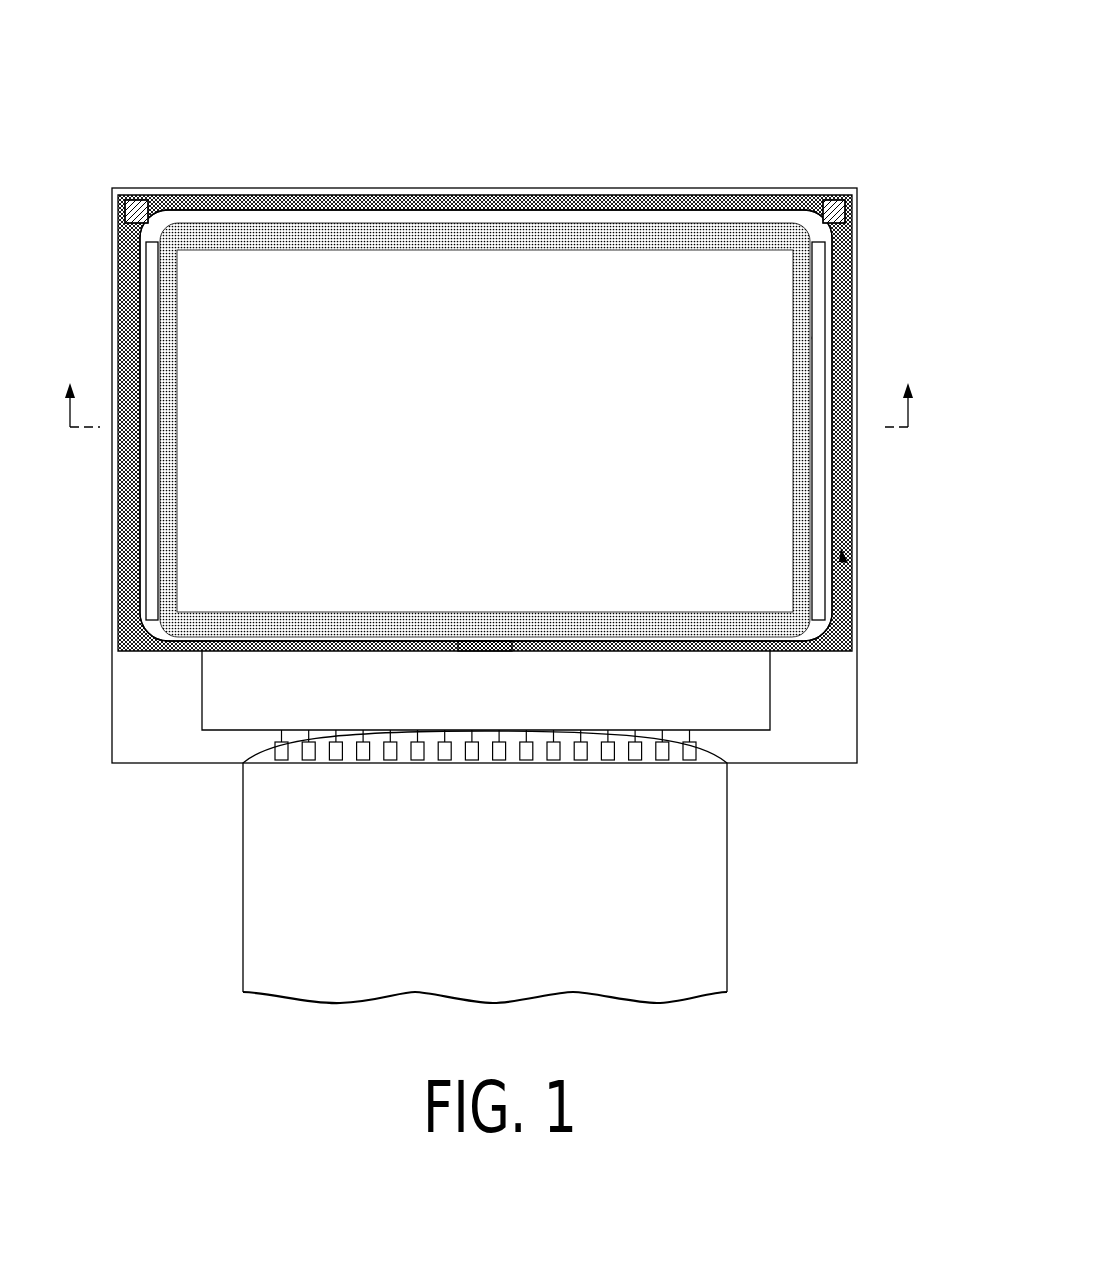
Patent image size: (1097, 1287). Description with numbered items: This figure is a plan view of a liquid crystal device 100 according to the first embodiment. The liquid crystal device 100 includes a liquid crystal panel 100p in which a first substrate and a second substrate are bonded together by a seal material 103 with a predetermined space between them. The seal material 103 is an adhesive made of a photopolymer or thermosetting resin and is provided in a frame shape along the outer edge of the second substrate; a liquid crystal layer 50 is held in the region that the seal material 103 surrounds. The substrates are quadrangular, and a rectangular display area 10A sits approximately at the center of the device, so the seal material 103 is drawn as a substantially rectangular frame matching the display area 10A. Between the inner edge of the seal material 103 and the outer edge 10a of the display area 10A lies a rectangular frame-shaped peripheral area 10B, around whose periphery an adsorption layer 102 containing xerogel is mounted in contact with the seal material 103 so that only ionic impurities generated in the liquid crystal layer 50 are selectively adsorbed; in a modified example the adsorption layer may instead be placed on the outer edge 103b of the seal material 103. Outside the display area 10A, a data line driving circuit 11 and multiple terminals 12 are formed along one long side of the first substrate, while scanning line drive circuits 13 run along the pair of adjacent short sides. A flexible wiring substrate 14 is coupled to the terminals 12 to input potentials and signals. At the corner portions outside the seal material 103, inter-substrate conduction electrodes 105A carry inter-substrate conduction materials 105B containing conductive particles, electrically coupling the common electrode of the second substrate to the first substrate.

The liquid crystal device 100 is at (709, 118).
The liquid crystal panel 100p is at (542, 176).
The liquid crystal layer 50 is at (396, 232).
The display area 10A is at (508, 422).
The peripheral area 10B is at (848, 566).
The outer edge of the display area 10a is at (777, 637).
The data line driving circuit 11 is at (771, 697).
The terminals 12 is at (512, 753).
The scanning line drive circuits 13 is at (152, 503).
The flexible wiring substrate 14 is at (728, 887).
The adsorption layer 102 is at (838, 517).
The seal material 103 is at (852, 290).
The outer edge of the seal material 103b is at (816, 346).
The inter-substrate conduction electrodes 105A is at (134, 200).
The inter-substrate conduction materials 105B is at (832, 200).